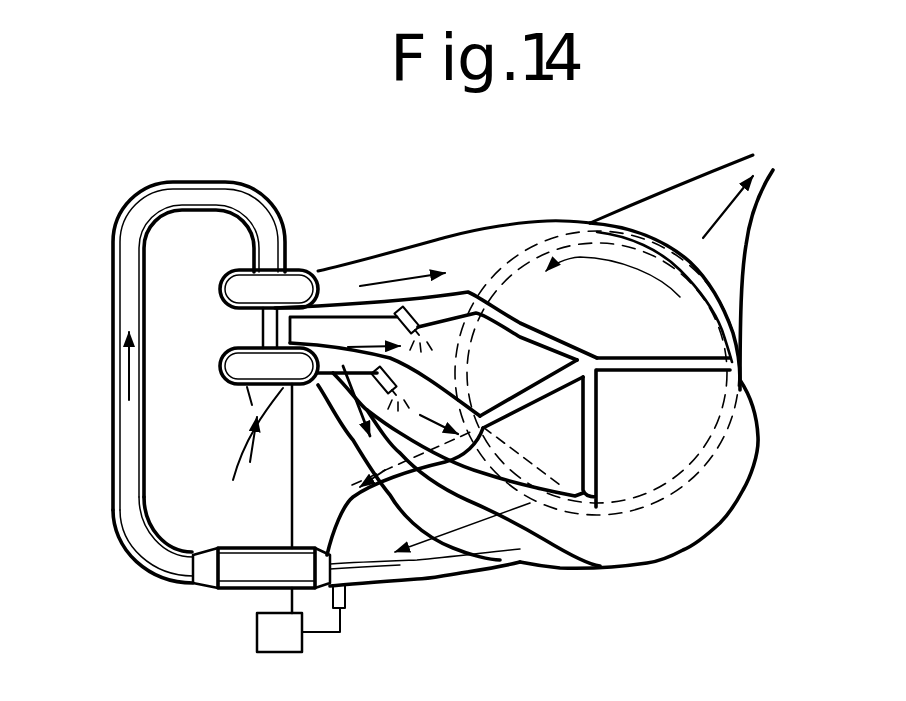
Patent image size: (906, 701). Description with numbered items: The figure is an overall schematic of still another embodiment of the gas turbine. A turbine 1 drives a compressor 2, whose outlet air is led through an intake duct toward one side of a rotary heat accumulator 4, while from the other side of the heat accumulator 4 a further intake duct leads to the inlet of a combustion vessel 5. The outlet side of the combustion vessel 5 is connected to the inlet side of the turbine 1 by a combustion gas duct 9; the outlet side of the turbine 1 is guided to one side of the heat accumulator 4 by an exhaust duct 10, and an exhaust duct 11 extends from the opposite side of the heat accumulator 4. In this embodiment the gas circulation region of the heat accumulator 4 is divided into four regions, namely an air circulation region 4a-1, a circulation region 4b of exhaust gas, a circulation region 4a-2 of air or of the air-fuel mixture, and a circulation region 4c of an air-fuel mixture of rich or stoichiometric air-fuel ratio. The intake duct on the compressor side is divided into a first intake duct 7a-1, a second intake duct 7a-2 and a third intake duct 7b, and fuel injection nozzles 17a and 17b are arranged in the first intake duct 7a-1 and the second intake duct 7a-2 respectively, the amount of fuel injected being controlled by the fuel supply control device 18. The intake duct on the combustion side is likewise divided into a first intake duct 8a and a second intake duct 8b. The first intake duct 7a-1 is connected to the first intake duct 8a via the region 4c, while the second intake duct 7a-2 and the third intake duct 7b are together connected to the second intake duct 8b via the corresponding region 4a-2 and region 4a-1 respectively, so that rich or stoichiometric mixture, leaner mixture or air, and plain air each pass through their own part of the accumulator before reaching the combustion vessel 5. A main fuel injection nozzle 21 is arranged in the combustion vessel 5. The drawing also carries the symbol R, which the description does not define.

The turbine 1 is at (233, 292).
The compressor 2 is at (237, 363).
The rotary heat accumulator 4 is at (748, 372).
The air circulation region 4a-1 is at (685, 437).
The circulation region of air or the air-fuel mixture 4a-2 is at (555, 450).
The circulation region of exhaust gas 4b is at (700, 343).
The circulation region of the air-fuel mixture of a rich or stoichiometric air-fuel 4c is at (513, 347).
The combustion vessel 5 is at (237, 558).
The first intake duct 7a-1 is at (437, 375).
The second intake duct 7a-2 is at (477, 455).
The third intake duct 7b is at (603, 550).
The first intake duct 8a is at (350, 487).
The second intake duct 8b is at (470, 575).
The combustion gas duct 9 is at (125, 450).
The exhaust duct 10 is at (365, 273).
The exhaust duct 11 is at (768, 173).
The fuel injection nozzle 17a is at (408, 307).
The fuel injection nozzle 17b is at (377, 370).
The fuel supply control device 18 is at (267, 630).
The main fuel injection nozzle 21 is at (347, 593).
The rotation direction R is at (580, 258).